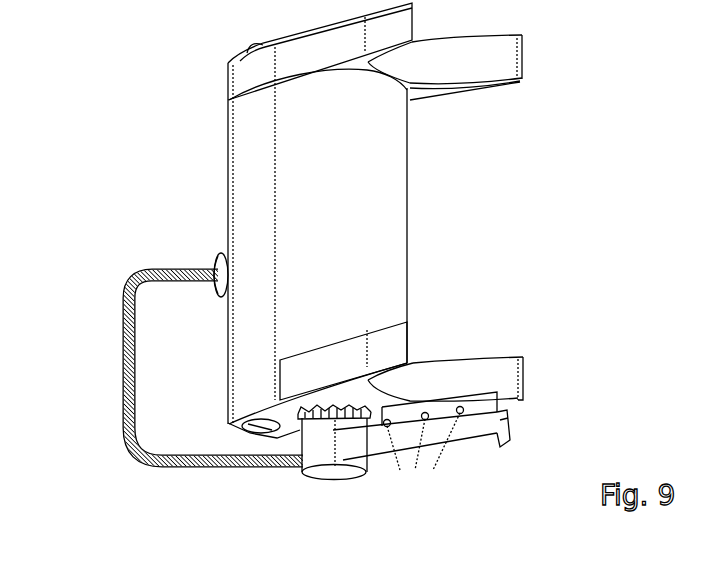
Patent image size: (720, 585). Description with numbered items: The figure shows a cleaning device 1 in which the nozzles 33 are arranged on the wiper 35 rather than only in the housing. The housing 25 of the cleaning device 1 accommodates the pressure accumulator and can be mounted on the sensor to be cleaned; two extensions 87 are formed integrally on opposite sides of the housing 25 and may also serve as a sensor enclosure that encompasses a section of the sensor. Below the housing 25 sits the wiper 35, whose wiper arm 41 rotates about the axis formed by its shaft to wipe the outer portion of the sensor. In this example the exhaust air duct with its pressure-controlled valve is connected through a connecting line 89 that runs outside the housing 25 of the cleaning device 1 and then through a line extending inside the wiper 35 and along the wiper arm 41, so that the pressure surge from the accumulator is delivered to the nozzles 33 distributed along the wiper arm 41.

The cleaning device 1 is at (176, 100).
The housing 25 is at (241, 203).
The nozzle 33 is at (461, 412).
The wiper 35 is at (318, 476).
The wiper arm 41 is at (477, 443).
The extension 87 is at (435, 311).
The connecting line 89 is at (122, 366).